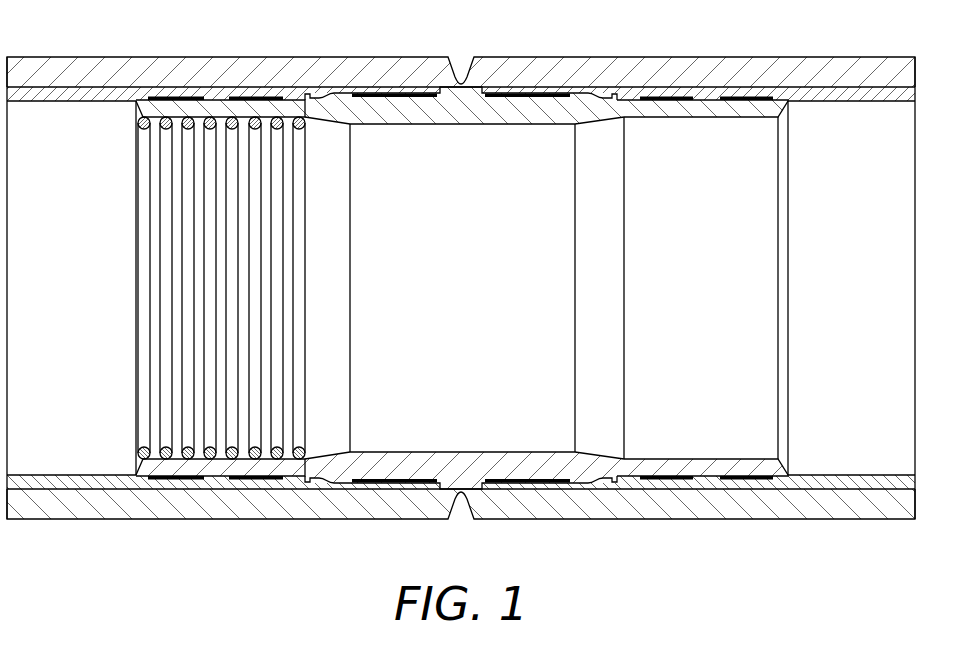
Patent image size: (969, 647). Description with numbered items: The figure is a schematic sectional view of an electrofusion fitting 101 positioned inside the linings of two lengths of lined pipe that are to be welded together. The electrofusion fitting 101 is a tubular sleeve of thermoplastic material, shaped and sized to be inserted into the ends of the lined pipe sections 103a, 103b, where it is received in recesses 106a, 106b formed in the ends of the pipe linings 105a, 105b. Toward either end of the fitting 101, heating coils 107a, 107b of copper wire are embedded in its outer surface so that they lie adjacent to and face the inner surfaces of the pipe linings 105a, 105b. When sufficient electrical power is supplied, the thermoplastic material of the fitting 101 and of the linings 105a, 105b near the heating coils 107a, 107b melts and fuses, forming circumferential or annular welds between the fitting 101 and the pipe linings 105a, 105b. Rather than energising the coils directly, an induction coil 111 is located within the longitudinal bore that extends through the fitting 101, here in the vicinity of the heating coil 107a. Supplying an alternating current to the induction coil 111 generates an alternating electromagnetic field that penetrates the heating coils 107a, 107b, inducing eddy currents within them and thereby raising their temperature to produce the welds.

The electrofusion fitting 101 is at (535, 468).
The lined pipe section 103a is at (390, 68).
The lined pipe section 103b is at (535, 68).
The pipe lining 105a is at (72, 93).
The pipe lining 105b is at (853, 95).
The recess 106a is at (218, 102).
The recess 106b is at (708, 102).
The heating coil 107a is at (193, 481).
The heating coil 107b is at (683, 481).
The induction coil 111 is at (300, 288).